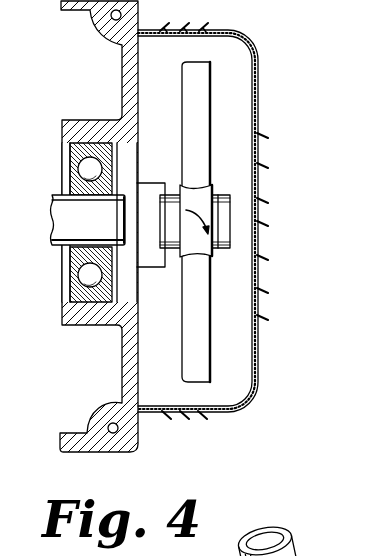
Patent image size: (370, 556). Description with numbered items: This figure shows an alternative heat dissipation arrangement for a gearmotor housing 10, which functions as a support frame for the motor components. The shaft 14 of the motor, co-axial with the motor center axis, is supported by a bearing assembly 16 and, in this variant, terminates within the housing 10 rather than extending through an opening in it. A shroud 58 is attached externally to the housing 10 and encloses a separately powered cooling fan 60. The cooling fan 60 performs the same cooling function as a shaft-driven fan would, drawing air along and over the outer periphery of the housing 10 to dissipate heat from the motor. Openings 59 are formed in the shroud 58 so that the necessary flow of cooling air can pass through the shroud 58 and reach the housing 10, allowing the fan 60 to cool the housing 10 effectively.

The housing 10 is at (105, 461).
The shaft 14 is at (121, 263).
The bearing assembly 16 is at (61, 167).
The shroud 58 is at (217, 410).
The openings 59 is at (261, 289).
The cooling fan 60 is at (212, 88).